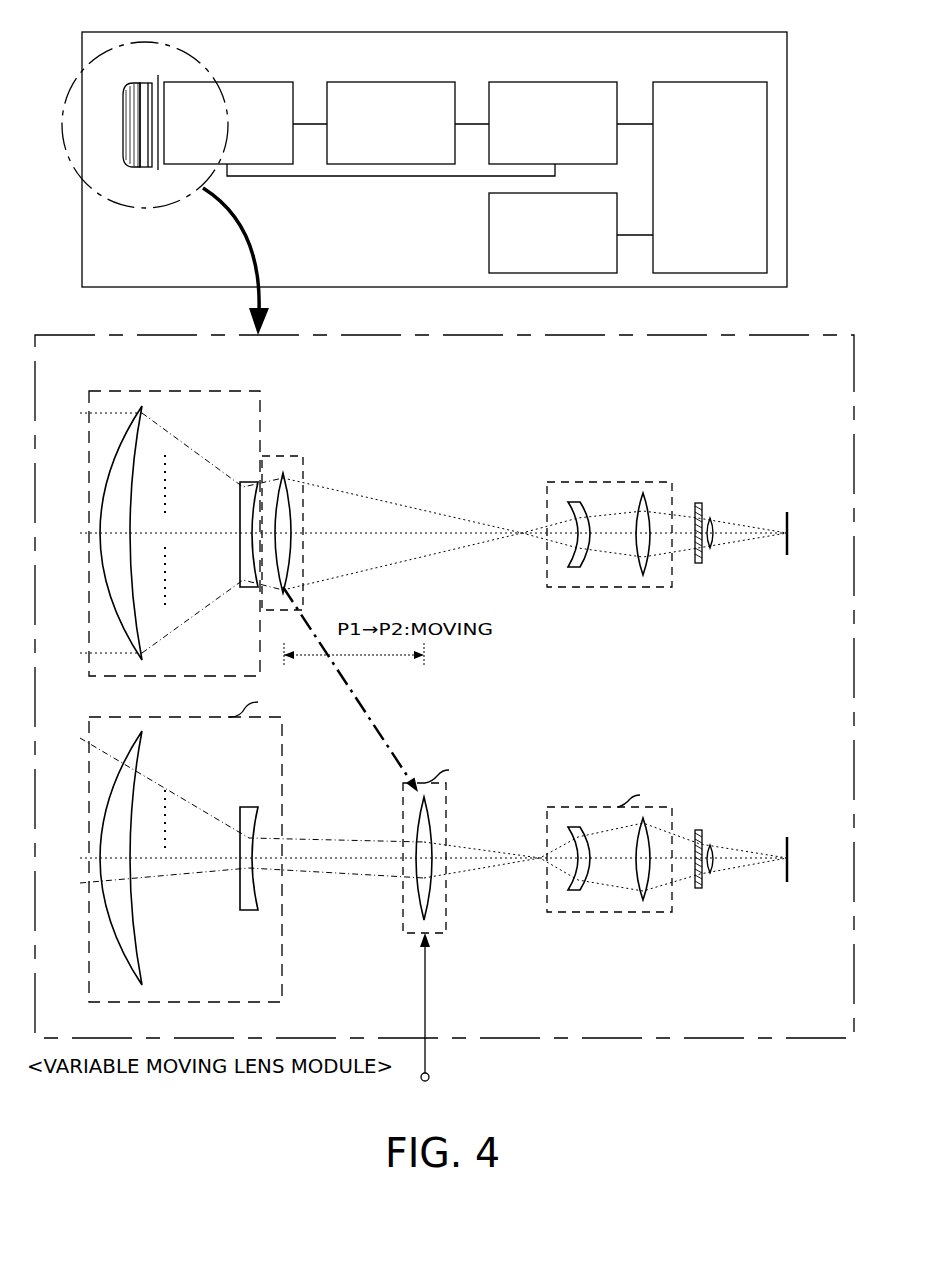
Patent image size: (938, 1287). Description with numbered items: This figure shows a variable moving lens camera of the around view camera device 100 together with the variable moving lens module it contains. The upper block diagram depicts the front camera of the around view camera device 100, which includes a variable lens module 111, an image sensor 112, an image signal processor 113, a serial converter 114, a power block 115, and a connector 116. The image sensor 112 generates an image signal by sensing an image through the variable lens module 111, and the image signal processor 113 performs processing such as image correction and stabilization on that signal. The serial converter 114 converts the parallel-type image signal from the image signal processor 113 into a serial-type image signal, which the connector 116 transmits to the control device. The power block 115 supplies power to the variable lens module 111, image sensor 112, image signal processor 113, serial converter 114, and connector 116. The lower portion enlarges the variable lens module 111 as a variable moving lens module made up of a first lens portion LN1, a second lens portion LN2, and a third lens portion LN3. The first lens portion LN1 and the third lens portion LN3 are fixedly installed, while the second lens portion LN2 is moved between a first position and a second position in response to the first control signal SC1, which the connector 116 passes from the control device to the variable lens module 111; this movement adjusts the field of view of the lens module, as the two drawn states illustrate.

The around view camera device 100 is at (742, 32).
The variable lens module 111 is at (125, 100).
The image sensor 112 is at (245, 82).
The image signal processor 113 is at (410, 82).
The serial converter 114 is at (576, 82).
The power block 115 is at (575, 193).
The connector 116 is at (723, 82).
The first lens portion LN1 is at (205, 391).
The second lens portion LN2 is at (283, 456).
The third lens portion LN3 is at (618, 482).
The first control signal SC1 is at (425, 1023).